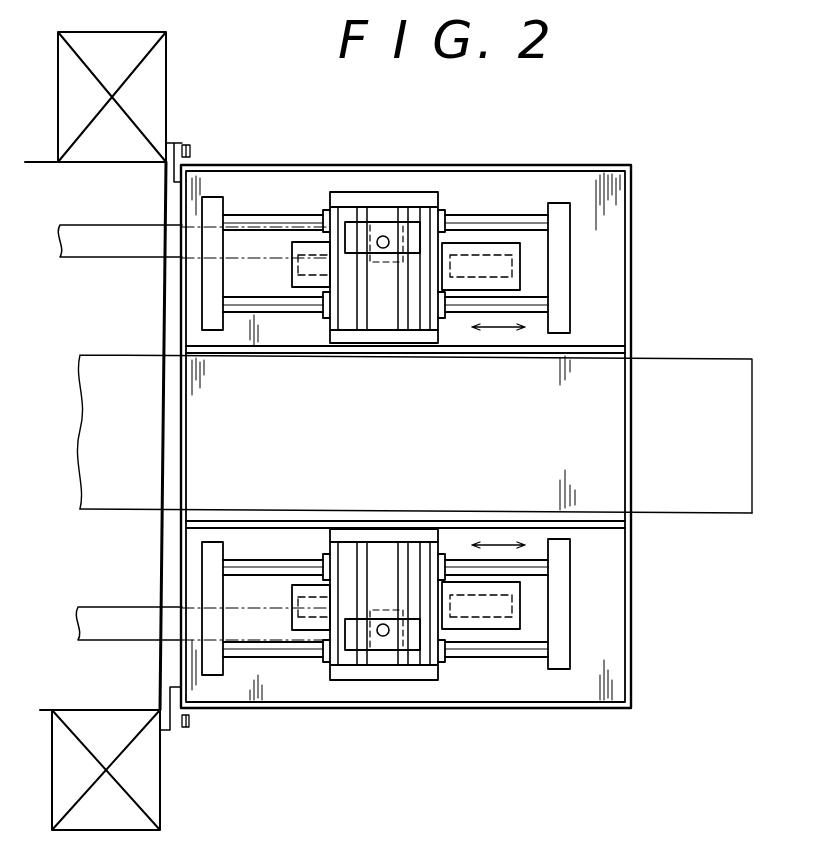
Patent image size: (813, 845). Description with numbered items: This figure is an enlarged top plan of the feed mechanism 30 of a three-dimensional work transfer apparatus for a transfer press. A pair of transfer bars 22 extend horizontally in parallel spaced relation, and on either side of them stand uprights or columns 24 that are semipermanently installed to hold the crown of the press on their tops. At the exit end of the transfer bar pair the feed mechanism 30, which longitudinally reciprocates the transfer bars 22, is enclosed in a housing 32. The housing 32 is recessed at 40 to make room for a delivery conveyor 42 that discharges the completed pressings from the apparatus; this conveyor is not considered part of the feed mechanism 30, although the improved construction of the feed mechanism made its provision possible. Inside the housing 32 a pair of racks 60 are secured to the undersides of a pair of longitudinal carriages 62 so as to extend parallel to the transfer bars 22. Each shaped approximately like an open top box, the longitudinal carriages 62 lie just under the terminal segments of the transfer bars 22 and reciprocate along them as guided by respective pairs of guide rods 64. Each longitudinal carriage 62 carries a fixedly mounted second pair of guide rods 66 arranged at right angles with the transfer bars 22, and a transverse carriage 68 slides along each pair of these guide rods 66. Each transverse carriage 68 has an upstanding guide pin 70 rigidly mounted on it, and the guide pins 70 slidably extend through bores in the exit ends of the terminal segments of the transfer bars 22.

The transfer bars 22 is at (136, 230).
The uprights or columns 24 is at (164, 67).
The feed mechanism 30 is at (610, 158).
The housing 32 is at (633, 245).
The recess 40 is at (608, 357).
The delivery conveyor 42 is at (650, 505).
The racks 60 is at (296, 275).
The longitudinal carriages 62 is at (372, 192).
The guide rods 64 is at (530, 305).
The guide rods 66 is at (400, 320).
The transverse carriages 68 is at (422, 224).
The guide pin 70 is at (383, 248).